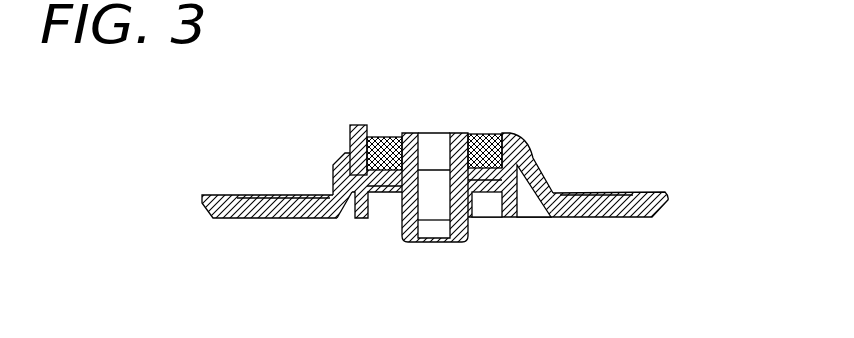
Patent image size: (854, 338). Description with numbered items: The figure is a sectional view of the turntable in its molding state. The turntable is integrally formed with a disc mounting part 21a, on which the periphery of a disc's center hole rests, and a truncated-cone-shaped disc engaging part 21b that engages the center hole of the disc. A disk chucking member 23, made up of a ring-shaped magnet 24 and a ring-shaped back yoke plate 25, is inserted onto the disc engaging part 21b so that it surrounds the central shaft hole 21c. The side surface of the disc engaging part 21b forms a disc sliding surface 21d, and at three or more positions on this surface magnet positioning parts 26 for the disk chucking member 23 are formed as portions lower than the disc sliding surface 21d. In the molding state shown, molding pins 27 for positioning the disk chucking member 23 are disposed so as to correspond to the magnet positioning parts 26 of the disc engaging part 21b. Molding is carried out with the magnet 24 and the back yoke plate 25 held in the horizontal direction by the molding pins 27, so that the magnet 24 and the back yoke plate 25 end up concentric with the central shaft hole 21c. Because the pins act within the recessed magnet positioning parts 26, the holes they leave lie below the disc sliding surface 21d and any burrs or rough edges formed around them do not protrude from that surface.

The disc mounting part 21a is at (666, 204).
The disc engaging part 21b is at (517, 132).
The central shaft hole 21c is at (418, 152).
The disc sliding surface 21d is at (531, 157).
The disk chucking member 23 is at (386, 133).
The magnet 24 is at (483, 182).
The back yoke plate 25 is at (384, 190).
The magnet positioning parts 26 is at (346, 155).
The molding pins 27 is at (358, 127).